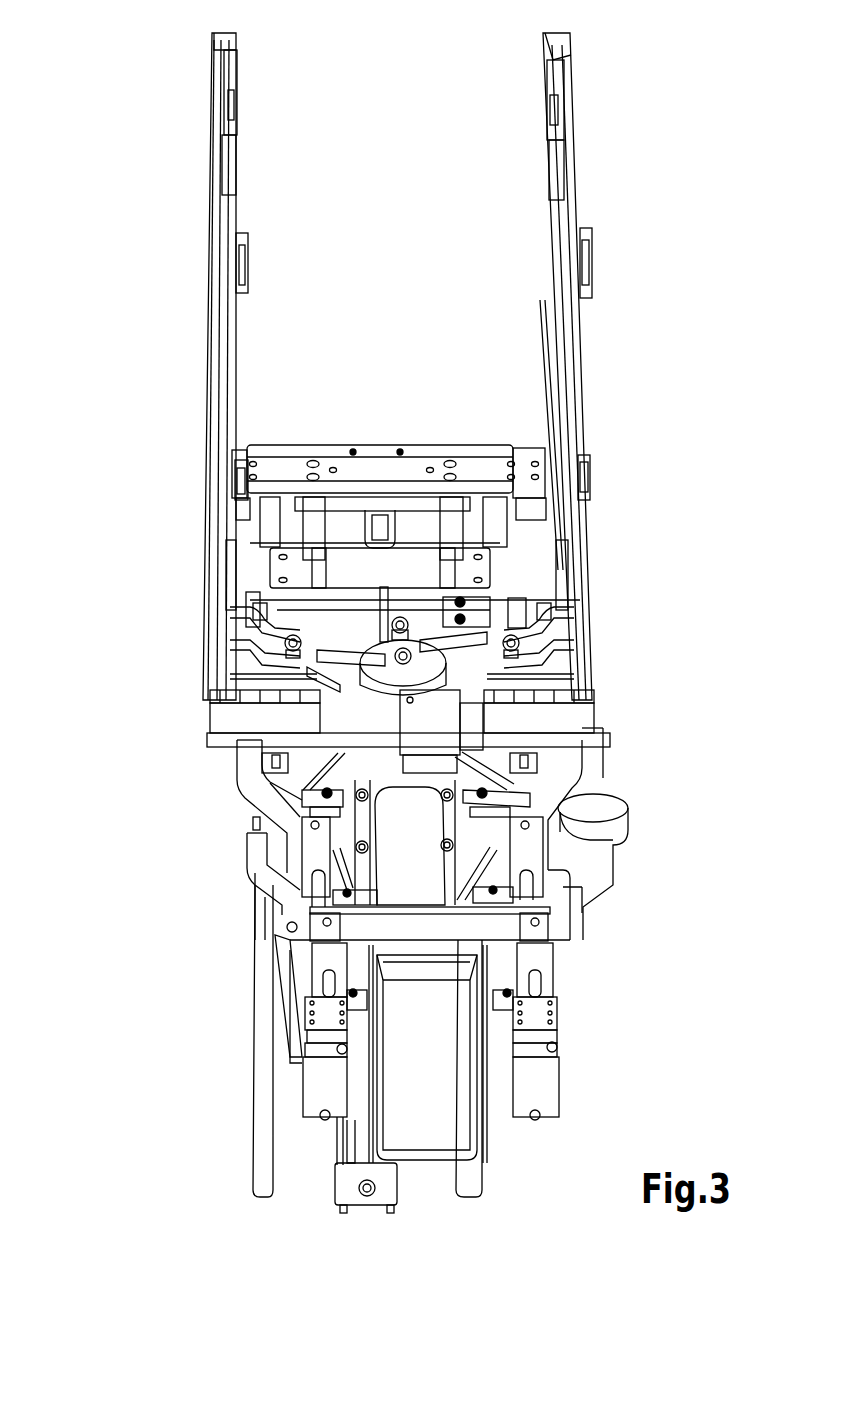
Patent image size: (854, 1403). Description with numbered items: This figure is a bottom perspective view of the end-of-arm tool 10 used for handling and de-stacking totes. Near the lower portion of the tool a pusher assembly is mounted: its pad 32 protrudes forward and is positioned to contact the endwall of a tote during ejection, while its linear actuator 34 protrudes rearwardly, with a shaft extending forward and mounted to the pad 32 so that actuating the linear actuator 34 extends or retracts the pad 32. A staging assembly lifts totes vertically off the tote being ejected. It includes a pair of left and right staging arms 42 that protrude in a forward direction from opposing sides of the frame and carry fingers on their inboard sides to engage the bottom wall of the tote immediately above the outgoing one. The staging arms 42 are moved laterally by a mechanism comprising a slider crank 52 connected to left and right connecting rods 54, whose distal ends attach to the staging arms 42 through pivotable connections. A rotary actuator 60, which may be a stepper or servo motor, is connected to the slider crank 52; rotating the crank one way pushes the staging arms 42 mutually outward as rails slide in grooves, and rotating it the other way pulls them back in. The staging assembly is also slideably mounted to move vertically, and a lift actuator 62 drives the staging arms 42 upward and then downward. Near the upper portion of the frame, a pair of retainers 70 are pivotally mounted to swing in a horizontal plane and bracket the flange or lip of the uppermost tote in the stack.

The tool 10 is at (84, 931).
The pad 32 is at (387, 468).
The linear actuator 34 is at (358, 1152).
The staging arms 42 is at (232, 335).
The slider crank 52 is at (328, 647).
The connecting rods 54 is at (433, 658).
The rotary actuator 60 is at (422, 727).
The lift actuator 62 is at (433, 1063).
The retainers 70 is at (243, 761).